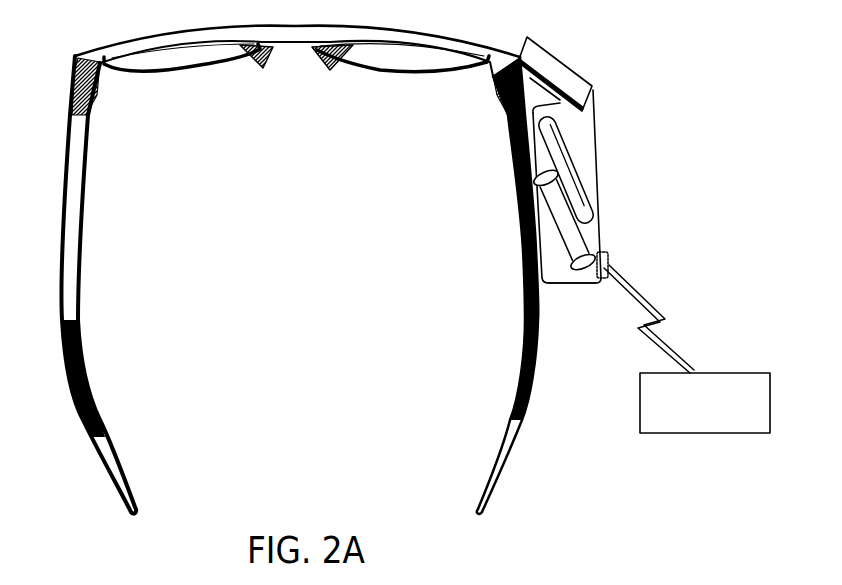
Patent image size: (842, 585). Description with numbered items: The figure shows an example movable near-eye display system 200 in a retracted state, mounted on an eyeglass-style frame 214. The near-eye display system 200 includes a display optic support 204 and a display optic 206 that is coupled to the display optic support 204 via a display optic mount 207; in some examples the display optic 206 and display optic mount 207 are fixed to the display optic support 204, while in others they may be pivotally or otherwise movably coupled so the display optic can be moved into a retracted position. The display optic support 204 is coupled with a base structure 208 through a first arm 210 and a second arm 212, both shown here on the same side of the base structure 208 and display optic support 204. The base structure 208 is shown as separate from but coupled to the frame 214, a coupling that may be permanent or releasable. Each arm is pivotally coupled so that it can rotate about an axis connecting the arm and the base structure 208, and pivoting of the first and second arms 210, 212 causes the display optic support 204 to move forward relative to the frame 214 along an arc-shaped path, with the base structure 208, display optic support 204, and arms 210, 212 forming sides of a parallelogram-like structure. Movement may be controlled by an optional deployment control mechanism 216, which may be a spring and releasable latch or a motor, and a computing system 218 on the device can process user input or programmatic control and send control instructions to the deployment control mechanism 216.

The near-eye display system 200 is at (624, 155).
The display optic support 204 is at (597, 126).
The display optic 206 is at (533, 78).
The display optic mount 207 is at (563, 61).
The base structure 208 is at (552, 283).
The first arm 210 is at (577, 190).
The second arm 212 is at (570, 238).
The frame 214 is at (204, 29).
The deployment control mechanism 216 is at (609, 263).
The computing system 218 is at (687, 349).